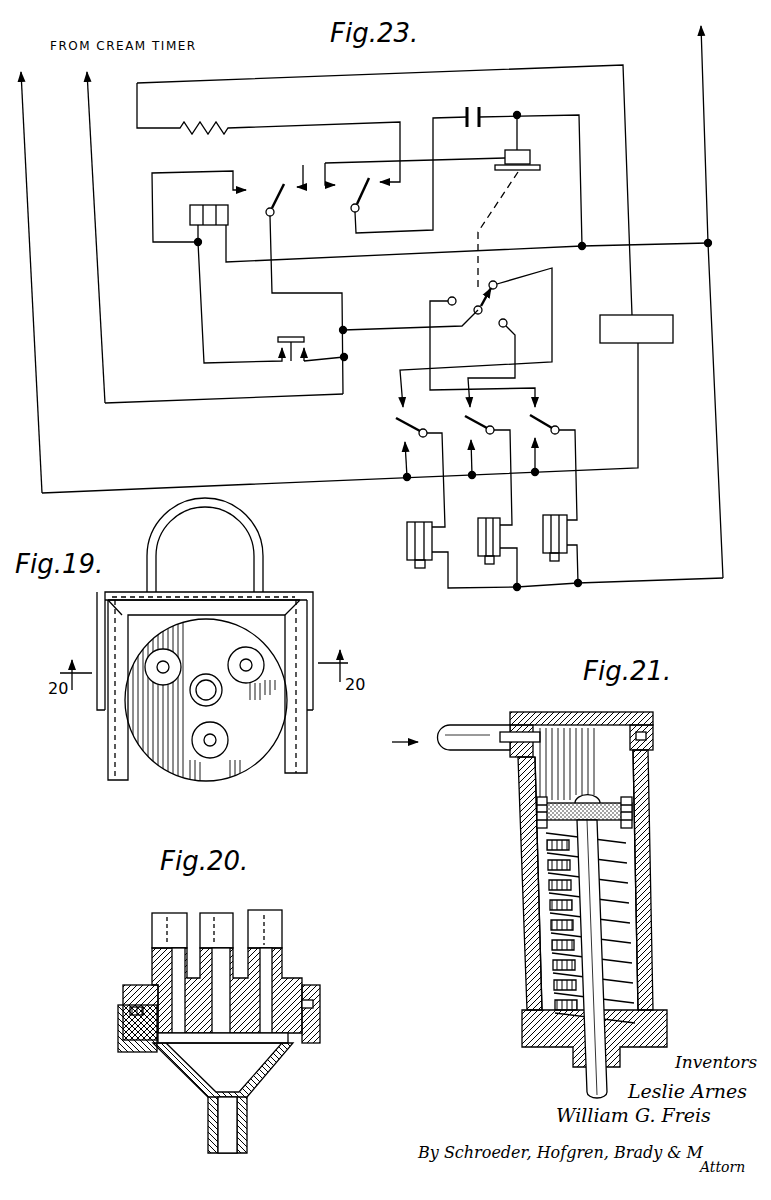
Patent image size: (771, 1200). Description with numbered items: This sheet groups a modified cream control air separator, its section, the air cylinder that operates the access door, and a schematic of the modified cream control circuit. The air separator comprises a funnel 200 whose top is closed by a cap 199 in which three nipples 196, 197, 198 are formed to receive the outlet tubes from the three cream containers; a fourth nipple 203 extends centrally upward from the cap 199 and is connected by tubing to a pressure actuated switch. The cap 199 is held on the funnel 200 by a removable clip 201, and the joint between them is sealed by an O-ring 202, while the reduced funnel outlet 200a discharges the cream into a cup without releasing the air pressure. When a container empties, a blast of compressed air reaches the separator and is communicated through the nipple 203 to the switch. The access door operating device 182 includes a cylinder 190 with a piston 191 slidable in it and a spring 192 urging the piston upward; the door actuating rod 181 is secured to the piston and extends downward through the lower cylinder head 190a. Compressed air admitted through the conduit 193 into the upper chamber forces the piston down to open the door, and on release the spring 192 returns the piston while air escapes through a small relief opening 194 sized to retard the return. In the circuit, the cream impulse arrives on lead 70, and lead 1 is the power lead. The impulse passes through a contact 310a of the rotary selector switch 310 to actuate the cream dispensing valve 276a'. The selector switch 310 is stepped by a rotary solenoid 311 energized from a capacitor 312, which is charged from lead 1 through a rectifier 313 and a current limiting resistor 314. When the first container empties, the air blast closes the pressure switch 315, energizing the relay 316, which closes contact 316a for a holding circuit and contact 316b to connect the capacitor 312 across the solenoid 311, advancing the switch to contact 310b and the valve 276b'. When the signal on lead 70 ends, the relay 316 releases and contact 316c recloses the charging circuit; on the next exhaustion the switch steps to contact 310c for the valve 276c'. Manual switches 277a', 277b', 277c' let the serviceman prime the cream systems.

In FIG. 23, the power lead 1 is at (24, 150).
In FIG. 23, the lead 70 is at (89, 106).
In FIG. 23, the current limiting resistor 314 is at (384, 190).
In FIG. 23, the capacitor 312 is at (470, 108).
In FIG. 23, the rotary solenoid 311 is at (522, 151).
In FIG. 23, the rectifier 313 is at (648, 313).
In FIG. 23, the relay 316 is at (201, 206).
In FIG. 23, the relay contact 316a is at (252, 190).
In FIG. 23, the relay contact 316b is at (326, 188).
In FIG. 23, the relay contact 316c is at (373, 186).
In FIG. 23, the pressure switch 315 is at (288, 362).
In FIG. 23, the rotary selector switch 310 is at (474, 302).
In FIG. 23, the contact 310a is at (476, 337).
In FIG. 23, the contact 310b is at (510, 357).
In FIG. 23, the contact 310c is at (465, 346).
In FIG. 23, the manual switch 277a' is at (392, 472).
In FIG. 23, the manual switch 277b' is at (467, 467).
In FIG. 23, the manual switch 277c' is at (565, 461).
In FIG. 23, the cream dispensing valve 276a' is at (430, 555).
In FIG. 23, the cream dispensing valve 276b' is at (516, 543).
In FIG. 23, the cream dispensing valve 276c' is at (633, 551).
In FIG. 19, the removable clip 201 is at (303, 752).
In FIG. 19, the nipple 196 is at (166, 642).
In FIG. 19, the nipple 198 is at (244, 648).
In FIG. 19, the nipple 197 is at (203, 758).
In FIG. 19, the fourth nipple 203 is at (222, 697).
In FIG. 20, the fourth nipple 203 is at (230, 913).
In FIG. 20, the cap 199 is at (302, 980).
In FIG. 20, the O-ring 202 is at (123, 1040).
In FIG. 20, the air separator funnel 200 is at (282, 1058).
In FIG. 20, the reduced funnel outlet 200a is at (247, 1132).
In FIG. 21, the conduit 193 is at (458, 724).
In FIG. 21, the relief opening 194 is at (655, 719).
In FIG. 21, the access door operating device 182 is at (656, 874).
In FIG. 21, the cylinder 190 is at (637, 812).
In FIG. 21, the piston 191 is at (537, 815).
In FIG. 21, the spring 192 is at (640, 925).
In FIG. 21, the lower cylinder head 190a is at (667, 1012).
In FIG. 21, the door actuating rod 181 is at (586, 1082).